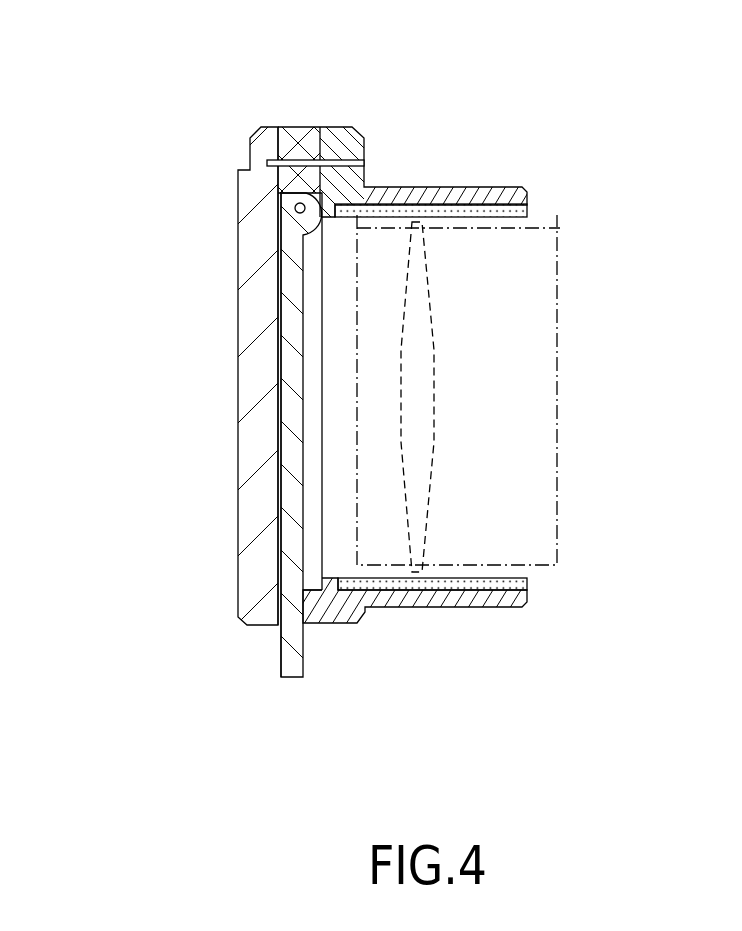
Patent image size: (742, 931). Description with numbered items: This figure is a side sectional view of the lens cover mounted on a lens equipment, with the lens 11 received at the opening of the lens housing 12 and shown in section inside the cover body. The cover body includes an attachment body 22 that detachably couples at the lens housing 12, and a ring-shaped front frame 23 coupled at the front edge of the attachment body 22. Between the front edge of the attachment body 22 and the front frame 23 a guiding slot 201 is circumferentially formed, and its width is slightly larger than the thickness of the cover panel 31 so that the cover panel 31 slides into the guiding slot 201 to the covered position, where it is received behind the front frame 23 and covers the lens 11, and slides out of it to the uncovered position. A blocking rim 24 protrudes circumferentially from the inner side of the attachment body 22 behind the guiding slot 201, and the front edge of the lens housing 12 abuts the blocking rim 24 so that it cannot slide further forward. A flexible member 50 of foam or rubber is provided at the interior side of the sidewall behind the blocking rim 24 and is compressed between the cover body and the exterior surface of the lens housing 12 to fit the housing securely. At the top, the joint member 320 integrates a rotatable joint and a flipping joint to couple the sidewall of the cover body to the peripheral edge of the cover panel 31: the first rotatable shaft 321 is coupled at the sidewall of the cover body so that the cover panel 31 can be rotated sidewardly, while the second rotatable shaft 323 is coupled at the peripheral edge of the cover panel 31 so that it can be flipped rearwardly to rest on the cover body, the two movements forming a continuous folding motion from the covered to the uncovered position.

The lens 11 is at (415, 337).
The lens housing 12 is at (557, 218).
The attachment body 22 is at (385, 600).
The front frame 23 is at (257, 569).
The blocking rim 24 is at (318, 593).
The cover panel 31 is at (292, 411).
The flexible member 50 is at (482, 603).
The guiding slot 201 is at (280, 363).
The joint member 320 is at (288, 142).
The first rotatable shaft 321 is at (289, 166).
The second rotatable shaft 323 is at (306, 205).